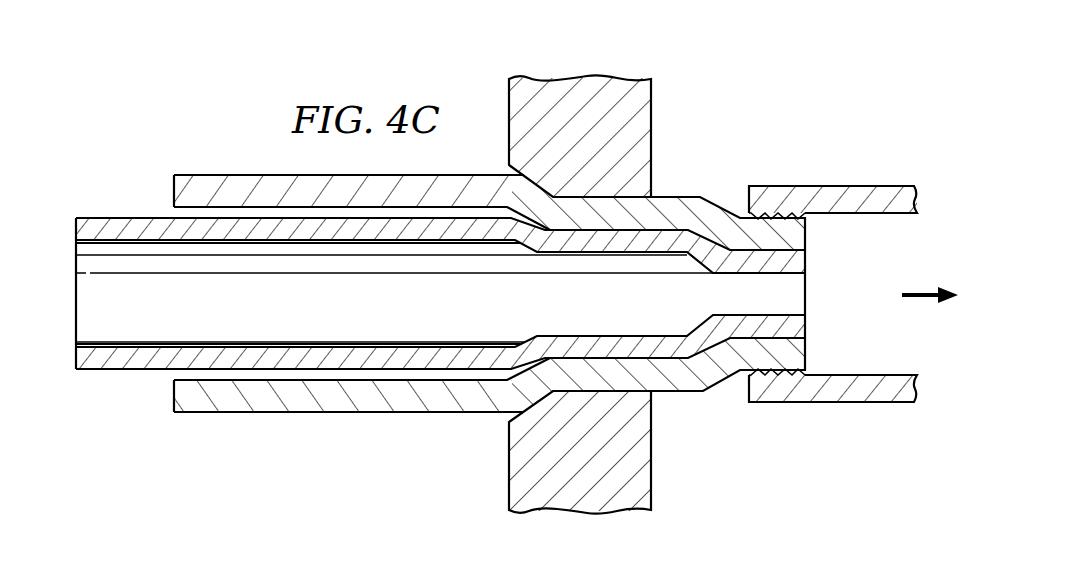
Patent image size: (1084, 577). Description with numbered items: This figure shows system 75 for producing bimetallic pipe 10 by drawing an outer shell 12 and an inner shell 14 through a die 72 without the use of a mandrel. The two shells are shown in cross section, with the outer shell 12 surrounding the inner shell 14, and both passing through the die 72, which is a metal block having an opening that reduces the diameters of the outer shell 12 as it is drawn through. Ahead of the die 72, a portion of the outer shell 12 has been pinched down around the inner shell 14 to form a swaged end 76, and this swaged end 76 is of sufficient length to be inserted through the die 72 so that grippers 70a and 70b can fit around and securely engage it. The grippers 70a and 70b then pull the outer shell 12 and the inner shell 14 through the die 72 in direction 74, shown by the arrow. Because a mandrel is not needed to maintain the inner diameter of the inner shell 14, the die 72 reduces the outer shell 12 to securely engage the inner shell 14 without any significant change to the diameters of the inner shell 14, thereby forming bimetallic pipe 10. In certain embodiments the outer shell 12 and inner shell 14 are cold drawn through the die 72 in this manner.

The bimetallic pipe 10 is at (146, 157).
The outer shell 12 is at (333, 413).
The inner shell 14 is at (125, 367).
The gripper 70a is at (838, 186).
The gripper 70b is at (837, 402).
The die 72 is at (507, 462).
The direction 74 is at (922, 292).
The system 75 is at (672, 93).
The swaged end 76 is at (735, 200).